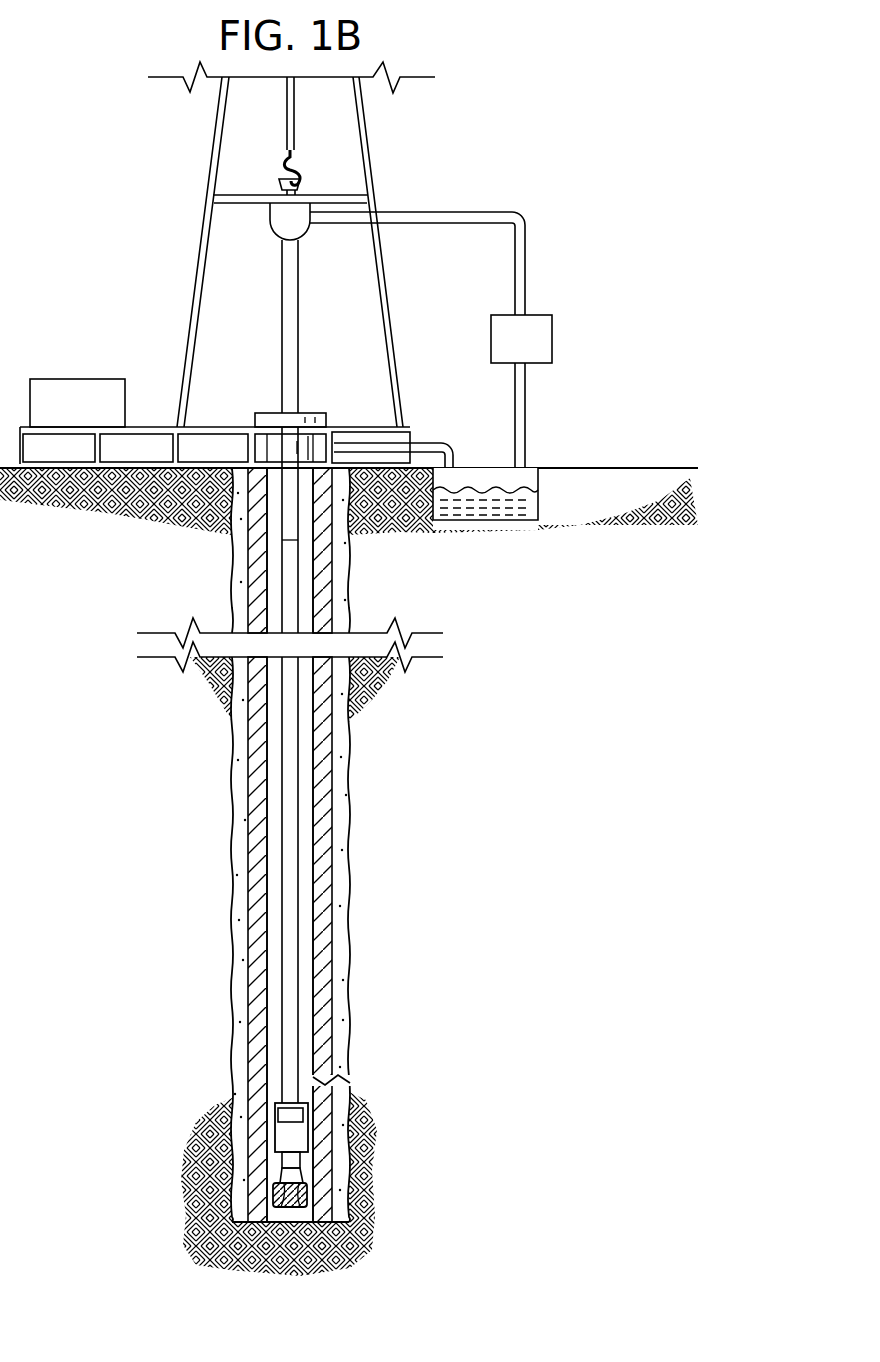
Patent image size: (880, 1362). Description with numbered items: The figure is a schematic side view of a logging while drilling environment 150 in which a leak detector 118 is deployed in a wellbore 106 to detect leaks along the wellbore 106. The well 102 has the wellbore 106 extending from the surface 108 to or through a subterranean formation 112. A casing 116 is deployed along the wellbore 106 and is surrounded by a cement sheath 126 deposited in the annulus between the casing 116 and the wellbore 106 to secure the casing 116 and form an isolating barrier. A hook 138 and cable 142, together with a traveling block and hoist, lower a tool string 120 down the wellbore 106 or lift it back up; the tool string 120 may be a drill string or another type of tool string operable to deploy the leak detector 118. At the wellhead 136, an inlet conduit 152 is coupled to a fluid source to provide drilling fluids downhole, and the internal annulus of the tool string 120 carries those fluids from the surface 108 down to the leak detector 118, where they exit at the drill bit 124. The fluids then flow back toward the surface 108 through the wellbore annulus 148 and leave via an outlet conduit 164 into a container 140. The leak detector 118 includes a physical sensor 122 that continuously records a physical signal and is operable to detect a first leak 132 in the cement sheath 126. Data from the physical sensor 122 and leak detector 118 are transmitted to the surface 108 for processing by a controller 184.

The well 102 is at (313, 406).
The wellbore 106 is at (352, 820).
The surface 108 is at (635, 468).
The subterranean formation 112 is at (559, 753).
The casing 116 is at (328, 895).
The leak detector 118 is at (300, 1135).
The tool string 120 is at (280, 822).
The physical sensor 122 is at (283, 1117).
The drill bit 124 is at (300, 1196).
The cement sheath 126 is at (345, 775).
The first leak 132 is at (360, 1083).
The wellhead 136 is at (270, 411).
The hook 138 is at (305, 177).
The container 140 is at (480, 520).
The cable 142 is at (286, 137).
The wellbore annulus 148 is at (275, 935).
The logging while drilling environment 150 is at (137, 233).
The inlet conduit 152 is at (490, 212).
The outlet conduit 164 is at (420, 442).
The controller 184 is at (78, 378).